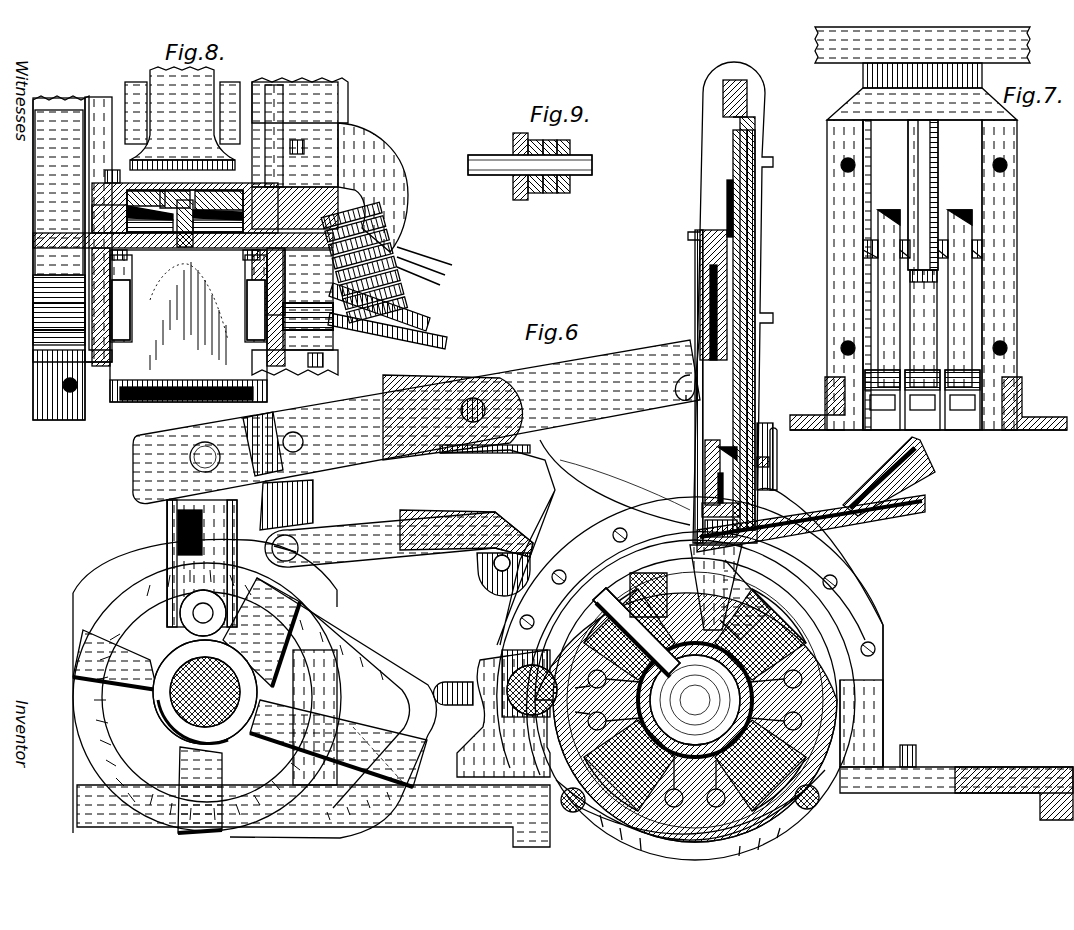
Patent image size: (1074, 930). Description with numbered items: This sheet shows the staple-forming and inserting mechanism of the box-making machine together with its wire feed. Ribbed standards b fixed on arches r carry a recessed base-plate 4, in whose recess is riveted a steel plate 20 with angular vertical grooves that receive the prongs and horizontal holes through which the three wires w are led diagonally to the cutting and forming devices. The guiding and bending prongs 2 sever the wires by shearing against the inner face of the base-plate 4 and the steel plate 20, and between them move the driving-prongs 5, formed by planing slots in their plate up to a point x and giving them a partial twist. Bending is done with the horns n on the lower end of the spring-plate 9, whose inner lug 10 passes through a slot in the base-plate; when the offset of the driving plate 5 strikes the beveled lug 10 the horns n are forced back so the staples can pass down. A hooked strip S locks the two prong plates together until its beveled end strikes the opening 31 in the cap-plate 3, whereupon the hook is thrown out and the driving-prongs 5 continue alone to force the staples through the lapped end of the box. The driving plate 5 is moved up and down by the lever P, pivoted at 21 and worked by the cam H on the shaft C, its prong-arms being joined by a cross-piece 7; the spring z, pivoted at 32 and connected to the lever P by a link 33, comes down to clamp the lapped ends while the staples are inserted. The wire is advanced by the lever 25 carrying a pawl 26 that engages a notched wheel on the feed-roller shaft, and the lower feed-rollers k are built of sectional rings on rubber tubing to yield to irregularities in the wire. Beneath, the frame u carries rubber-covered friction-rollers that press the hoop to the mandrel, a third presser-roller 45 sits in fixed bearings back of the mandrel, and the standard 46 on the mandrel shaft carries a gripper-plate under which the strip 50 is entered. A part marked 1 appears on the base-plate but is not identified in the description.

In FIG. 8, the plate 1 is at (109, 219).
In FIG. 8, the guiding and bending prongs 2 is at (135, 192).
In FIG. 7, the guiding and bending prongs 2 is at (922, 250).
In FIG. 6, the cap-plate 3 is at (712, 286).
In FIG. 8, the recessed base-plate 4 is at (278, 210).
In FIG. 7, the recessed base-plate 4 is at (922, 275).
In FIG. 6, the recessed base-plate 4 is at (742, 270).
In FIG. 8, the driving-prongs 5 is at (185, 199).
In FIG. 7, the driving-prongs 5 is at (925, 248).
In FIG. 6, the driving-prongs 5 is at (745, 90).
In FIG. 7, the cross-piece 7 is at (922, 45).
In FIG. 6, the cross-piece 7 is at (723, 90).
In FIG. 8, the spring-plate 9 is at (185, 232).
In FIG. 6, the spring-plate 9 is at (752, 230).
In FIG. 8, the inner lug 10 is at (182, 230).
In FIG. 6, the inner lug 10 is at (777, 440).
In FIG. 8, the steel plate 20 is at (160, 250).
In FIG. 6, the steel plate 20 is at (773, 470).
In FIG. 6, the lever pivot 21 is at (478, 378).
In FIG. 8, the feed lever 25 is at (440, 343).
In FIG. 8, the pawl 26 is at (418, 306).
In FIG. 6, the pawl 26 is at (695, 692).
In FIG. 6, the opening in cap-plate 31 is at (690, 405).
In FIG. 6, the spring pivot 32 is at (488, 575).
In FIG. 6, the link 33 is at (313, 498).
In FIG. 6, the presser-roller 45 is at (500, 662).
In FIG. 6, the standard 46 is at (600, 610).
In FIG. 6, the strip 50 is at (935, 480).
In FIG. 8, the ribbed standards b is at (110, 240).
In FIG. 6, the ribbed standards b is at (862, 612).
In FIG. 8, the arches r is at (322, 118).
In FIG. 6, the arches r is at (883, 718).
In FIG. 8, the lower feed-rollers k is at (398, 250).
In FIG. 8, the wires w is at (436, 274).
In FIG. 7, the hooked strip S is at (923, 195).
In FIG. 6, the hooked strip S is at (698, 278).
In FIG. 6, the lever P is at (412, 470).
In FIG. 6, the cam H is at (255, 700).
In FIG. 6, the shaft C is at (180, 710).
In FIG. 7, the horns n is at (888, 408).
In FIG. 6, the horns n is at (702, 512).
In FIG. 6, the frame u is at (605, 825).
In FIG. 6, the slot termination point x is at (760, 350).
In FIG. 6, the spring z is at (728, 182).